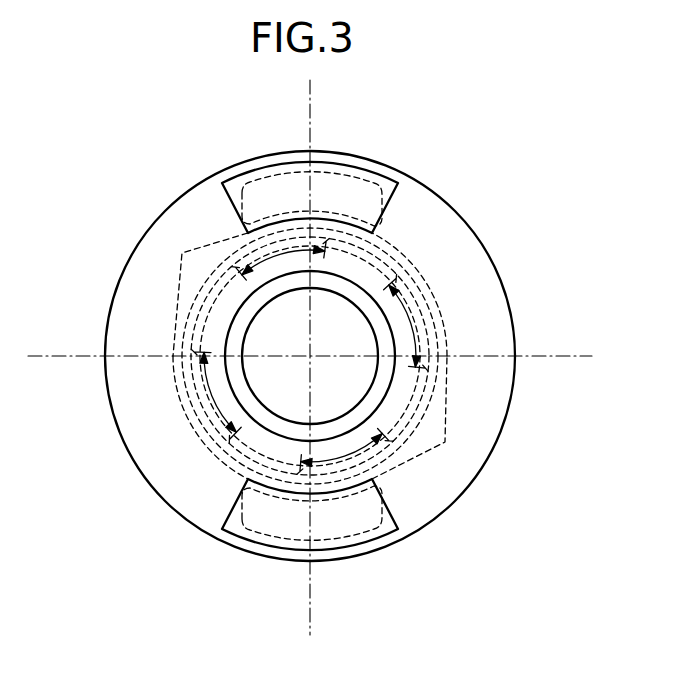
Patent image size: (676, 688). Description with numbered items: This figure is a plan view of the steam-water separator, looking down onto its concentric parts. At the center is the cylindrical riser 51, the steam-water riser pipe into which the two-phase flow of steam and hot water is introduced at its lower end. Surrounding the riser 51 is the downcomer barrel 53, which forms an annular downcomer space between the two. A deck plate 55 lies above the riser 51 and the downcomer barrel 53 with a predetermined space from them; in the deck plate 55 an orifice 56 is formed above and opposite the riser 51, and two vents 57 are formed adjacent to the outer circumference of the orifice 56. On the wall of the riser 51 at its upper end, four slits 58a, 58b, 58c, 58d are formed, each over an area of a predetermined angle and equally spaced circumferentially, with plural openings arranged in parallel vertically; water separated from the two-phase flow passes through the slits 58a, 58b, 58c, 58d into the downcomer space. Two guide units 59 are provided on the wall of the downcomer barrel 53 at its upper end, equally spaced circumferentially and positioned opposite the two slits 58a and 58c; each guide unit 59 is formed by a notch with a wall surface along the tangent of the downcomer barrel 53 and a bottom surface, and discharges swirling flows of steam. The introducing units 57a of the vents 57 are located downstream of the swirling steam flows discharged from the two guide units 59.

The riser 51 is at (431, 319).
The downcomer barrel 53 is at (442, 341).
The deck plate 55 is at (175, 480).
The orifice 56 is at (382, 387).
The vents 57 is at (402, 178).
The introducing units 57a is at (340, 163).
The slit 58a is at (376, 450).
The slit 58b is at (411, 291).
The slit 58c is at (272, 251).
The slit 58d is at (190, 402).
The guide unit 59 is at (191, 257).